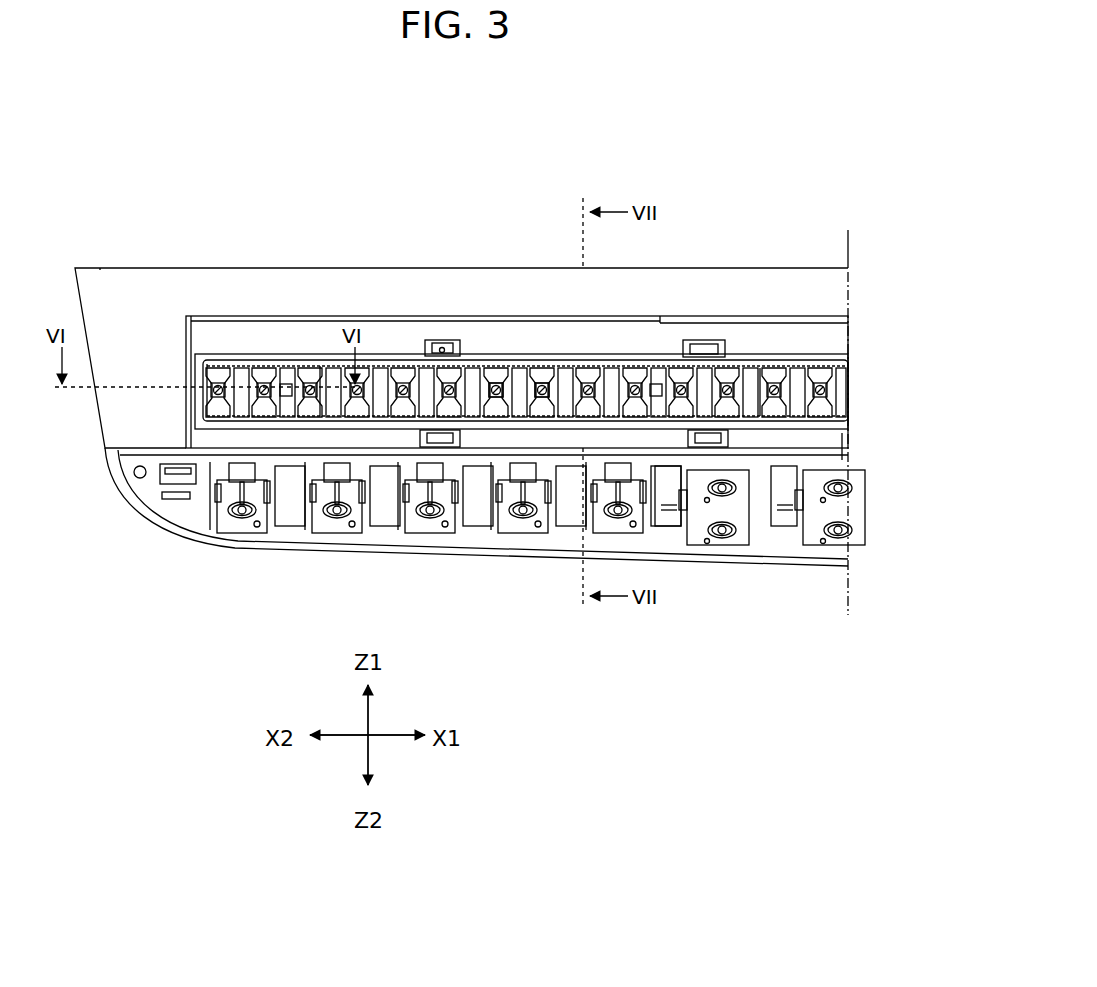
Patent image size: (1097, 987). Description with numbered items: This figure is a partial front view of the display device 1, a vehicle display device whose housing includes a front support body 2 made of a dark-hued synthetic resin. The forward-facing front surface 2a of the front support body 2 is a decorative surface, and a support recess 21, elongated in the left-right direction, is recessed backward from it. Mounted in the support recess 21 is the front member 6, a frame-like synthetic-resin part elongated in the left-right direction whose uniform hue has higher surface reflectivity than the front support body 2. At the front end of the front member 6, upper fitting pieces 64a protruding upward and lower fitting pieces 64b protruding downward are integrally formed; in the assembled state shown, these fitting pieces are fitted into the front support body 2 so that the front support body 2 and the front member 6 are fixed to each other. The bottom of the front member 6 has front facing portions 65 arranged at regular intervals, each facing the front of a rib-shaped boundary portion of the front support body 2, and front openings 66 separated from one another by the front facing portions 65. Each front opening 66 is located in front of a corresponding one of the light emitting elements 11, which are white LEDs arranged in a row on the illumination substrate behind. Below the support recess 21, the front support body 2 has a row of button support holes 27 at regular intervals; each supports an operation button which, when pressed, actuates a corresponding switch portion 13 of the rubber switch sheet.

The display device 1 is at (492, 240).
The front support body 2 is at (232, 280).
The front surface 2a is at (155, 340).
The front member 6 is at (462, 362).
The light emitting element 11 is at (542, 380).
The switch portion 13 is at (520, 520).
The support recess 21 is at (772, 372).
The button support hole 27 is at (532, 538).
The upper fitting piece 64a is at (440, 340).
The lower fitting piece 64b is at (422, 442).
The front facing portion 65 is at (338, 364).
The front opening 66 is at (310, 400).